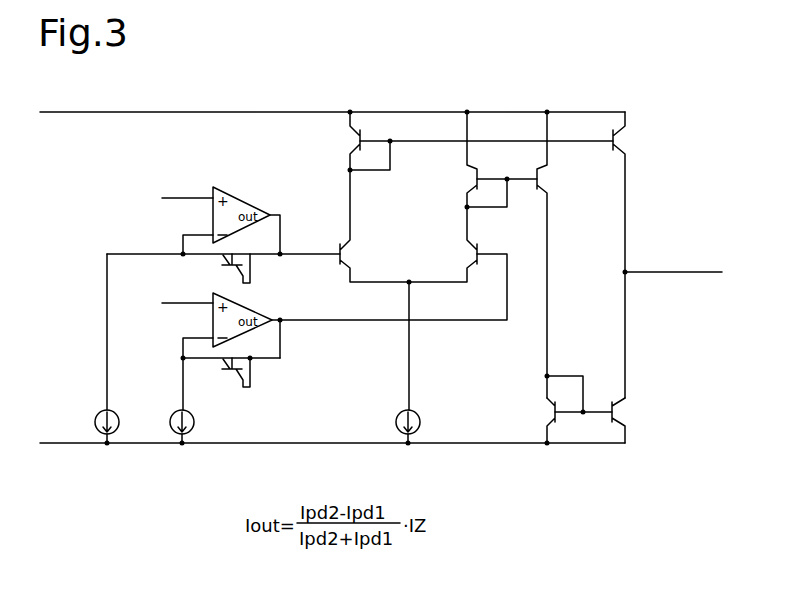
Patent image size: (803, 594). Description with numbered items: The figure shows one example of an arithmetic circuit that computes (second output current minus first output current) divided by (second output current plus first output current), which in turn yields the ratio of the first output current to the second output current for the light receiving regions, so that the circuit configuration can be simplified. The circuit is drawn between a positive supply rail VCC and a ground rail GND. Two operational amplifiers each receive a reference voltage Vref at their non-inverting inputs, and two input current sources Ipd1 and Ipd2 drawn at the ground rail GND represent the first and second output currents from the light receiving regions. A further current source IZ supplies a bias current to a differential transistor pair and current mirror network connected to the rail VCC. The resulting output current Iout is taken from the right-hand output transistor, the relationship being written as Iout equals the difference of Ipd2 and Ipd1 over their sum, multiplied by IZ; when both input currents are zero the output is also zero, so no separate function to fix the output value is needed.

The positive supply rail VCC is at (332, 101).
The ground rail GND is at (332, 432).
The reference voltage input Vref is at (187, 240).
The photodiode current source 1 Ipd1 is at (126, 426).
The photodiode current source 2 Ipd2 is at (201, 426).
The bias current source IZ is at (418, 426).
The output current Iout is at (688, 259).